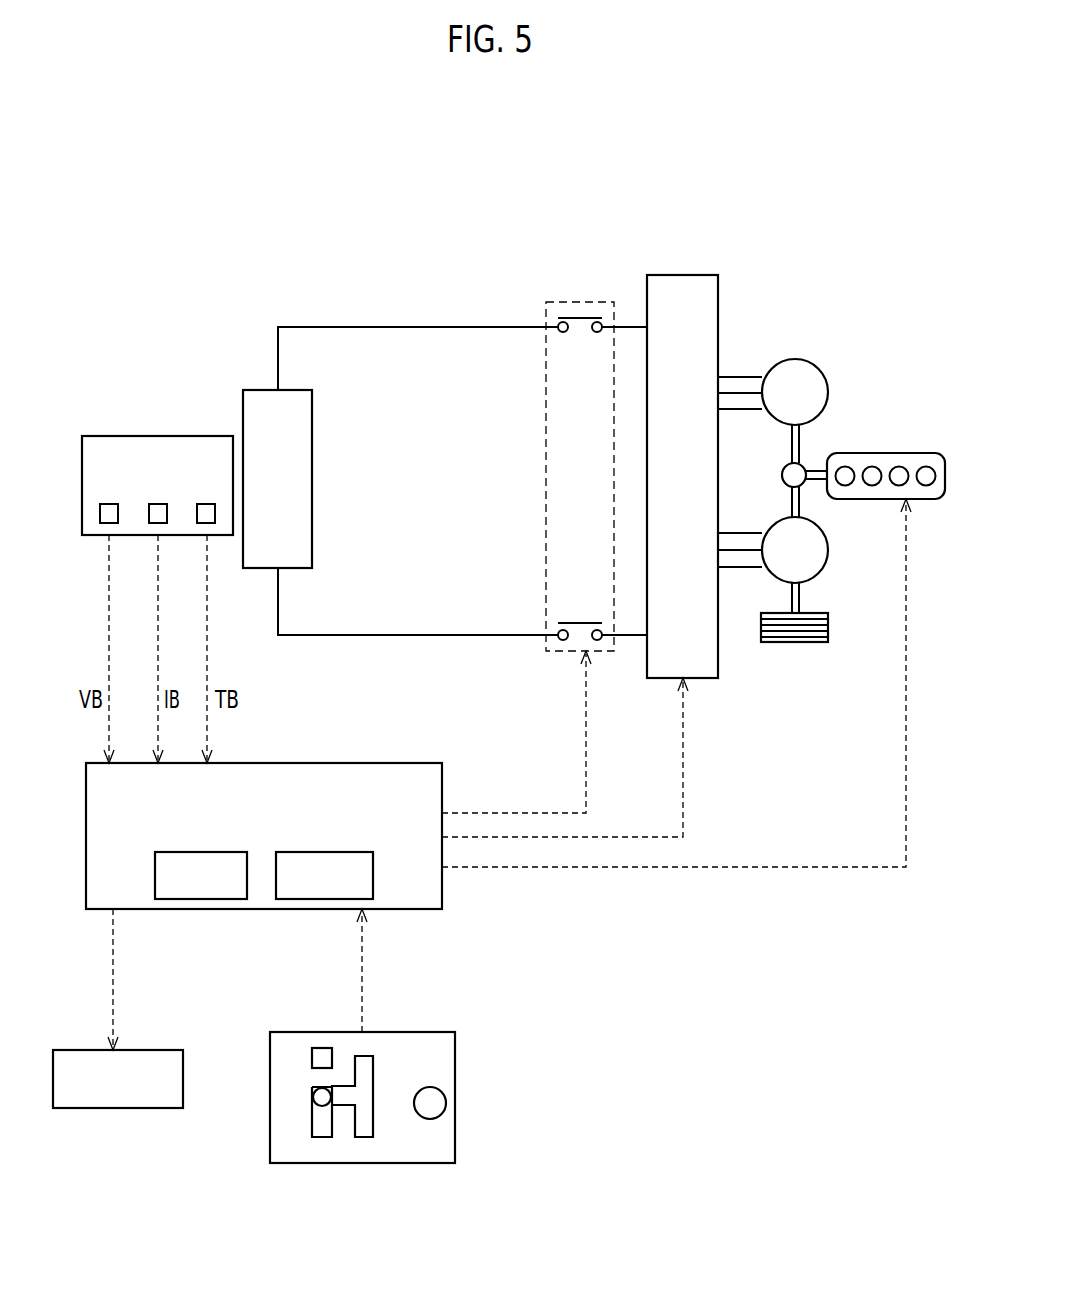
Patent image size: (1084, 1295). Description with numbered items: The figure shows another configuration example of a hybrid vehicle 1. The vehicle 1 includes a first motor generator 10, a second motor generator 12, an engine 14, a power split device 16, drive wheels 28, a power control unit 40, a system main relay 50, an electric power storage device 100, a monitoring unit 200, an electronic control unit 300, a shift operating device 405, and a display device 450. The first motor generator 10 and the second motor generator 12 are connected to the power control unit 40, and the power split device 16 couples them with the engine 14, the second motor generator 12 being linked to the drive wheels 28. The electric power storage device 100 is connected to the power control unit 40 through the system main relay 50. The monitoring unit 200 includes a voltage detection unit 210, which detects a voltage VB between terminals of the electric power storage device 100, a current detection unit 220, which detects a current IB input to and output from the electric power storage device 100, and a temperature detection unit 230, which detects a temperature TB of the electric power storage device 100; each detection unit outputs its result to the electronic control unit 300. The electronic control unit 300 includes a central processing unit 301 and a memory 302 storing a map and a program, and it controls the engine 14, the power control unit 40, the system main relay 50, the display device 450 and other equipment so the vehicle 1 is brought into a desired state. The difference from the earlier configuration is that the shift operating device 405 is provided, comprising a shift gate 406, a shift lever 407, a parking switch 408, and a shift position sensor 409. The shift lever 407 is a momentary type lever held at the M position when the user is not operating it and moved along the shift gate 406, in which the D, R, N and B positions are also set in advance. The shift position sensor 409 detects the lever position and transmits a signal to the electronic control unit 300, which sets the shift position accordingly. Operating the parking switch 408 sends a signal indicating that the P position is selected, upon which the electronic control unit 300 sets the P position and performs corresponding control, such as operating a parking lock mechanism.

The vehicle 1 is at (616, 933).
The first motor generator 10 is at (828, 392).
The second motor generator 12 is at (828, 550).
The engine 14 is at (883, 453).
The power split device 16 is at (806, 468).
The drive wheels 28 is at (792, 645).
The power control unit 40 is at (683, 275).
The system main relay 50 is at (591, 302).
The electric power storage device 100 is at (262, 390).
The monitoring unit 200 is at (118, 436).
The voltage detection unit 210 is at (100, 513).
The current detection unit 220 is at (167, 513).
The temperature detection unit 230 is at (215, 513).
The electronic control unit 300 is at (338, 763).
The central processing unit 301 is at (201, 899).
The memory 302 is at (324, 899).
The shift operating device 405 is at (440, 1032).
The shift gate 406 is at (368, 1055).
The shift lever 407 is at (315, 1090).
The parking switch 408 is at (447, 1098).
The shift position sensor 409 is at (321, 1048).
The display device 450 is at (155, 1050).